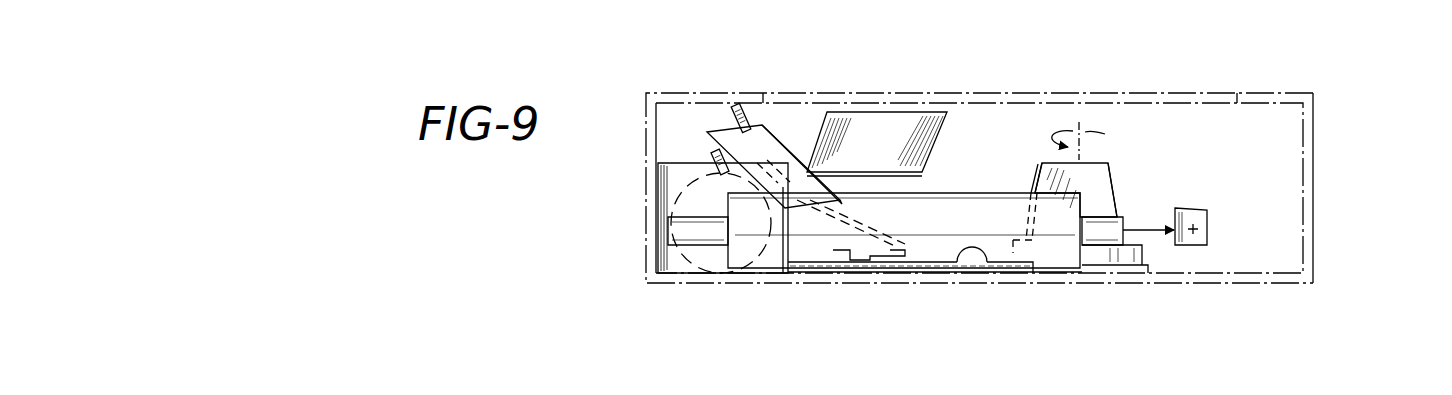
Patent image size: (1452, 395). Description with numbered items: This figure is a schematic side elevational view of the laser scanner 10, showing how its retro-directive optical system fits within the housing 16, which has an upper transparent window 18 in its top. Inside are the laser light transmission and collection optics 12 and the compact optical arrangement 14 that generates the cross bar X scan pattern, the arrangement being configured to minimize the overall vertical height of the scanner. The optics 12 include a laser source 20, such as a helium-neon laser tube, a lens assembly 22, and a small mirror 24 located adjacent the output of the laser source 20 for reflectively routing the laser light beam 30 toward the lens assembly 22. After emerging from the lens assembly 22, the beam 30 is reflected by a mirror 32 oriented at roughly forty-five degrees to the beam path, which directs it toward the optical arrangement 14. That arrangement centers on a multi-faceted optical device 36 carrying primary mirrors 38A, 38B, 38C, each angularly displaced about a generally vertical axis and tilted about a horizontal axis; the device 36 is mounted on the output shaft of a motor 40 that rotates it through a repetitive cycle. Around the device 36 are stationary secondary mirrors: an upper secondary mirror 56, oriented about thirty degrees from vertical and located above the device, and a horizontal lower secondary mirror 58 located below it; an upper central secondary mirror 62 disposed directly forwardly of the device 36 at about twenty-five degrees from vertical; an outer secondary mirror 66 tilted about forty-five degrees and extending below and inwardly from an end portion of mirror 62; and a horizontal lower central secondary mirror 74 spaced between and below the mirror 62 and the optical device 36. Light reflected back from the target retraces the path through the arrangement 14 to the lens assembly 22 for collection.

The laser scanner 10 is at (1367, 123).
The laser light transmission and collection optics 12 is at (737, 277).
The optical arrangement 14 is at (1043, 280).
The housing 16 is at (1315, 232).
The upper transparent window 18 is at (1215, 98).
The laser source 20 is at (940, 210).
The lens assembly 22 is at (678, 252).
The small mirror 24 is at (1208, 247).
The laser light beam 30 is at (1162, 228).
The mirror 32 is at (683, 162).
The multi-faceted optical device 36 is at (1105, 152).
The primary mirror 38A is at (1035, 173).
The primary mirror 38B is at (1088, 198).
The primary mirror 38C is at (1113, 172).
The motor 40 is at (1127, 252).
The upper secondary mirror 56 is at (960, 255).
The lower secondary mirror 58 is at (893, 120).
The upper central secondary mirror 62 is at (737, 117).
The left outer secondary mirror 66 is at (783, 142).
The lower central secondary mirror 74 is at (847, 252).